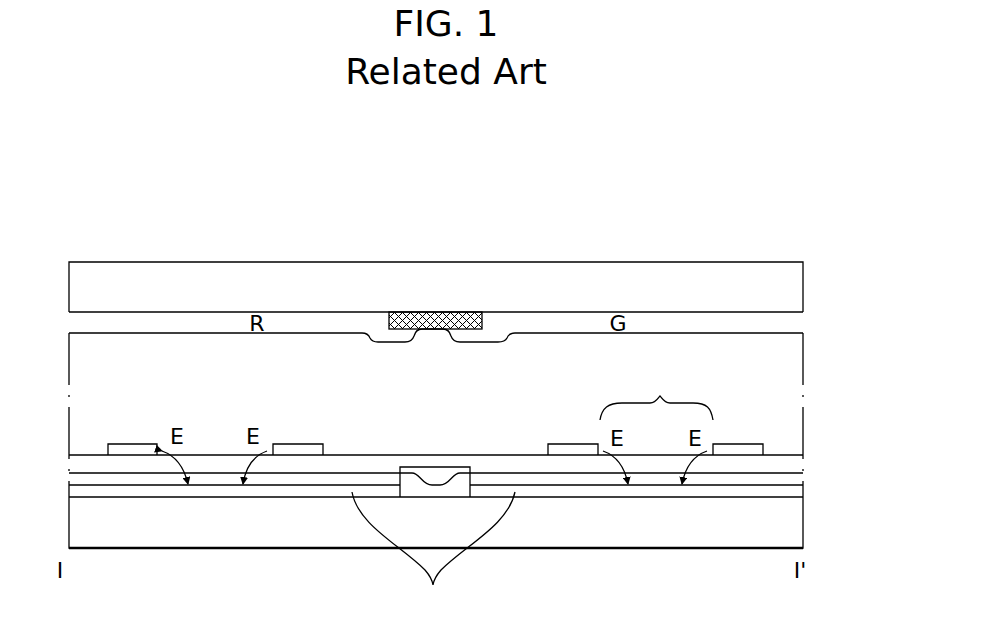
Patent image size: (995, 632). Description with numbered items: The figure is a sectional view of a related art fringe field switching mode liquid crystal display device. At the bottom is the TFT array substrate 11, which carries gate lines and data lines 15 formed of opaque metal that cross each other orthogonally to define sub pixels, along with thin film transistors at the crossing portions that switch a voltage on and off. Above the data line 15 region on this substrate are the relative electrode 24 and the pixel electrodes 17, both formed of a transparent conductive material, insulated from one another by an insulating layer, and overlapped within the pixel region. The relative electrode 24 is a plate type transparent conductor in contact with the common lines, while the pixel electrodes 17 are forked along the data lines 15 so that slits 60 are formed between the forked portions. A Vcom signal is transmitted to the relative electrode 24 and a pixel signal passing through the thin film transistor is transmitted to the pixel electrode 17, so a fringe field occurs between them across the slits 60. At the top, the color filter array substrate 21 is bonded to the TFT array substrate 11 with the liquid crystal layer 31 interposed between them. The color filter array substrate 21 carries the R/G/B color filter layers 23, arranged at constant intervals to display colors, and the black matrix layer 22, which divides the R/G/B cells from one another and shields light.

The TFT array substrate 11 is at (793, 528).
The data line 15 is at (435, 470).
The pixel electrode 17 is at (747, 450).
The color filter array substrate 21 is at (793, 280).
The black matrix layer 22 is at (445, 330).
The color filter layer 23 is at (793, 328).
The relative electrode 24 is at (433, 556).
The liquid crystal layer 31 is at (795, 389).
The slit 60 is at (656, 395).